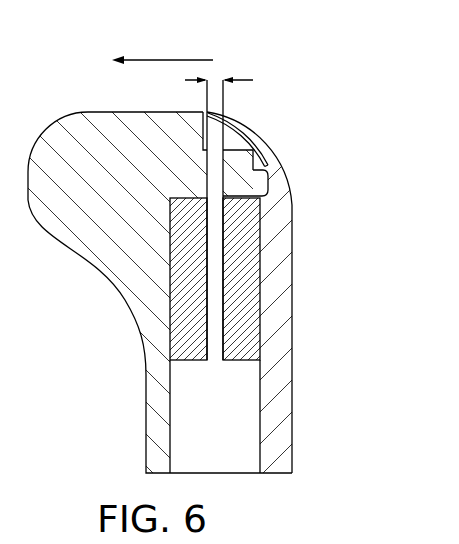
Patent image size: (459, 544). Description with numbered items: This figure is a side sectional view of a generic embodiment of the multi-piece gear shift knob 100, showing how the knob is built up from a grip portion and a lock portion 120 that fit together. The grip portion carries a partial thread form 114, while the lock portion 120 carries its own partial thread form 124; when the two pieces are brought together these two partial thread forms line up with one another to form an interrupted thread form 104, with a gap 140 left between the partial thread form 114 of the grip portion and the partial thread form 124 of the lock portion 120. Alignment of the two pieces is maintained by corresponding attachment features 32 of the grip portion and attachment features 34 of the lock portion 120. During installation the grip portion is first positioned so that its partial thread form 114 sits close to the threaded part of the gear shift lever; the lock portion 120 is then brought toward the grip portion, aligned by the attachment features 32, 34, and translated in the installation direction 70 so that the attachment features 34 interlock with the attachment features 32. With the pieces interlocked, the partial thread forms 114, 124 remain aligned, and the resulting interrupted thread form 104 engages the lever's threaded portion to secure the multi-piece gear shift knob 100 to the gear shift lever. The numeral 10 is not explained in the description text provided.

The shift knob body 10 is at (78, 112).
The installation direction 70 is at (165, 60).
The multi-piece gear shift knob 100 is at (267, 100).
The interrupted thread form 104 is at (198, 364).
The partial thread form 114 is at (187, 360).
The lock portion 120 is at (295, 280).
The partial thread form 124 is at (244, 360).
The gap 140 is at (195, 90).
The attachment features 32 is at (225, 143).
The attachment features 34 is at (262, 168).